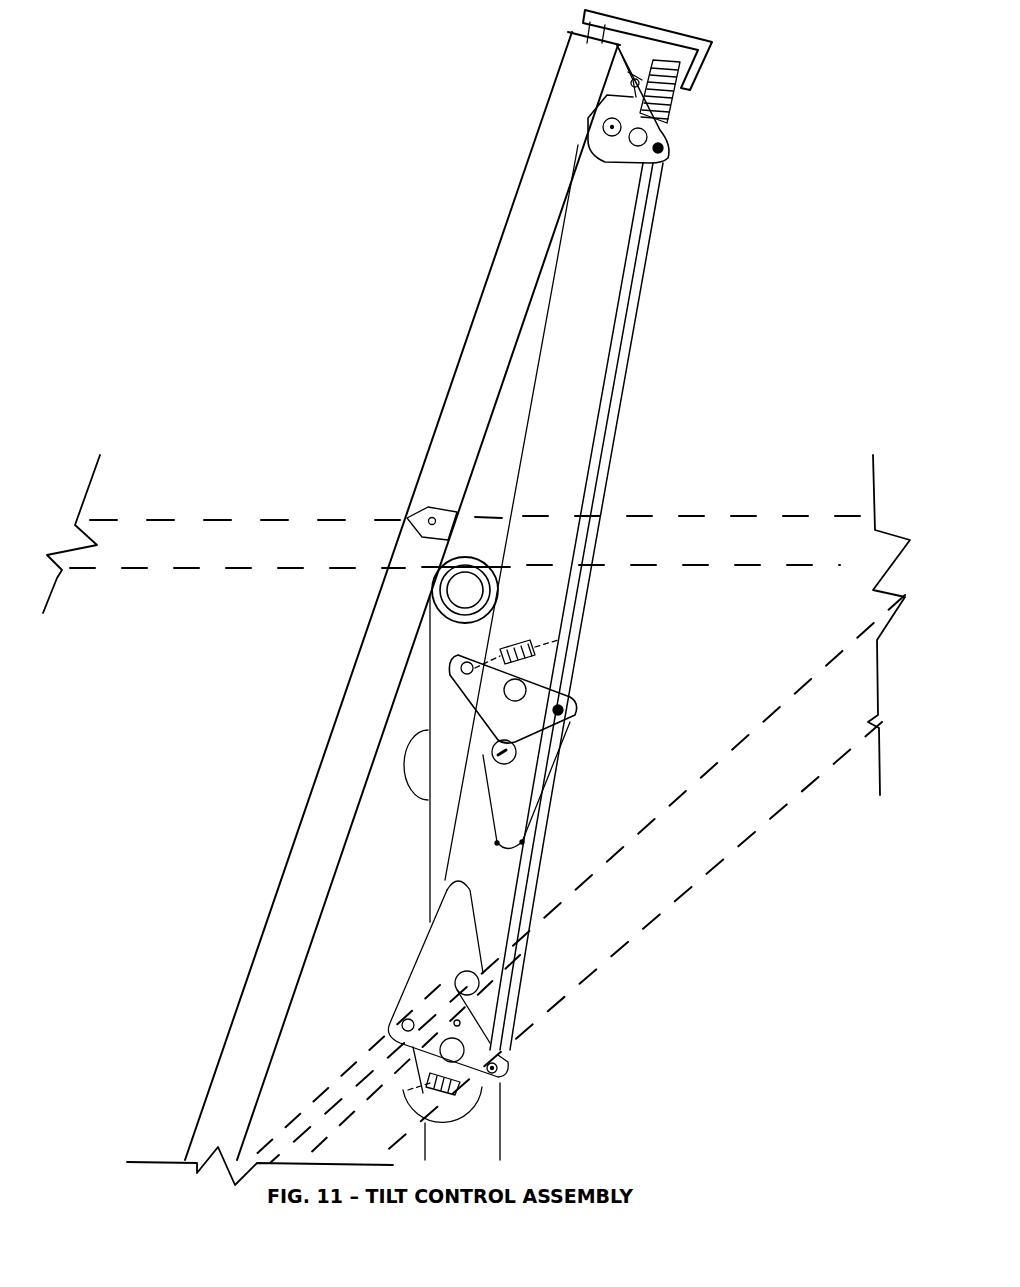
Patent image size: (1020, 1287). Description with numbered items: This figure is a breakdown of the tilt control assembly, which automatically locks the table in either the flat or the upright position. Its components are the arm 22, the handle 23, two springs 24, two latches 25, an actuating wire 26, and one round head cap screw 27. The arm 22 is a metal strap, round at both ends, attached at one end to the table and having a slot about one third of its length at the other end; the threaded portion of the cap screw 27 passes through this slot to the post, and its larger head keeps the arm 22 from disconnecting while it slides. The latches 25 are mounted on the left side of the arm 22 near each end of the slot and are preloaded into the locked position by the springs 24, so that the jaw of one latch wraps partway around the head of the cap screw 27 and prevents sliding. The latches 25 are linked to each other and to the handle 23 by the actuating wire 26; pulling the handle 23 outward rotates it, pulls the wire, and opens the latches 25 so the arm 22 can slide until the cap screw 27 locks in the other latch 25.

The arm 22 is at (573, 388).
The handle 23 is at (617, 148).
The springs 24 is at (515, 647).
The latches 25 is at (515, 815).
The actuating wire 26 is at (620, 420).
The round head cap screw 27 is at (518, 746).